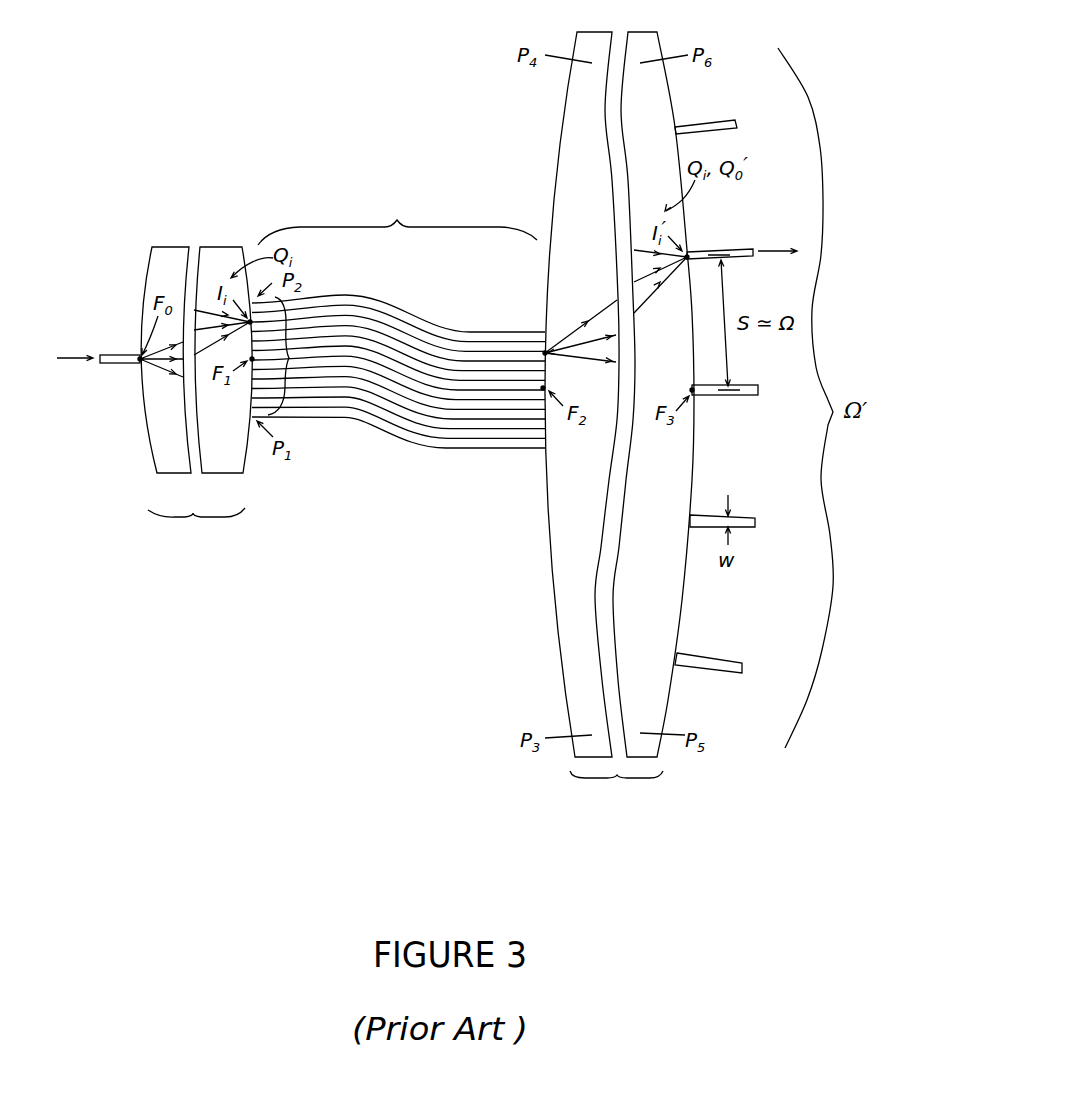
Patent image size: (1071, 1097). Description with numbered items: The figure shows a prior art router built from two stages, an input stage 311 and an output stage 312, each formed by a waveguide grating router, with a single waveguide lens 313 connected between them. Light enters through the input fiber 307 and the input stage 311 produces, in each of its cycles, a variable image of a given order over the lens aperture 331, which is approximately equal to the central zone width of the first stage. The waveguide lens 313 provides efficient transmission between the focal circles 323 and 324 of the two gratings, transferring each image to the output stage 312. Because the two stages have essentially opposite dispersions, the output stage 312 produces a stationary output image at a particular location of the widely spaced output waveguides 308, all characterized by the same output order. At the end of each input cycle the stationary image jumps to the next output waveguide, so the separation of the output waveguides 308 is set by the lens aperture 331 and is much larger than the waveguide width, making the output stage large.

The input optical fiber 307 is at (116, 343).
The output waveguides 308 is at (729, 237).
The input stage 311 is at (223, 412).
The output stage 312 is at (626, 436).
The waveguide lens 313 is at (398, 307).
The focal circle 323 is at (246, 462).
The focal circle 324 is at (546, 572).
The lens aperture 331 is at (298, 359).